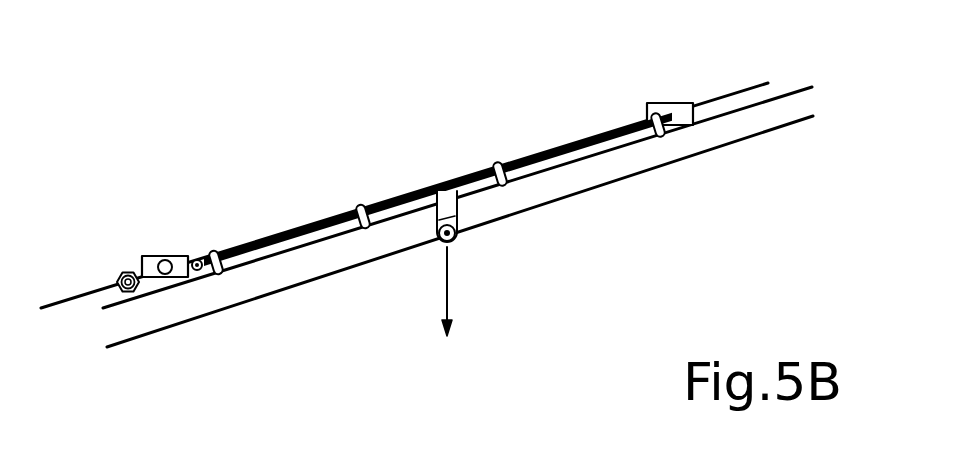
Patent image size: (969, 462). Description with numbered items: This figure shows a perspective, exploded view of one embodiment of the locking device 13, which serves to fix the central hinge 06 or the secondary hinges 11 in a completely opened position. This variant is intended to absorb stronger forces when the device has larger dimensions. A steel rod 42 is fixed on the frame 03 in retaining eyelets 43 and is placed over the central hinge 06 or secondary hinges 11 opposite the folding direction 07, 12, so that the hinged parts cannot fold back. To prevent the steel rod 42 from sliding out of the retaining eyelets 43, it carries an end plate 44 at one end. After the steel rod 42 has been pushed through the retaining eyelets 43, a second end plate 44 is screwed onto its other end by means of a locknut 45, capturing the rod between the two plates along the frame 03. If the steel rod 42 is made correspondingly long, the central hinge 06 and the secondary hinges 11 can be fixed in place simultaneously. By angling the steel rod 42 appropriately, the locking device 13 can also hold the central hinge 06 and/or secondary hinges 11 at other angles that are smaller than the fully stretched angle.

The frame 03 is at (770, 130).
The locking device 13 is at (392, 73).
The steel rod 42 is at (283, 228).
The retaining eyelets 43 is at (363, 205).
The end plate 44 is at (155, 258).
The locknut 45 is at (117, 286).
The central hinge 06 is at (513, 251).
The secondary hinges 11 is at (457, 237).
The folding direction 07 is at (450, 309).
The folding direction 12 is at (447, 291).